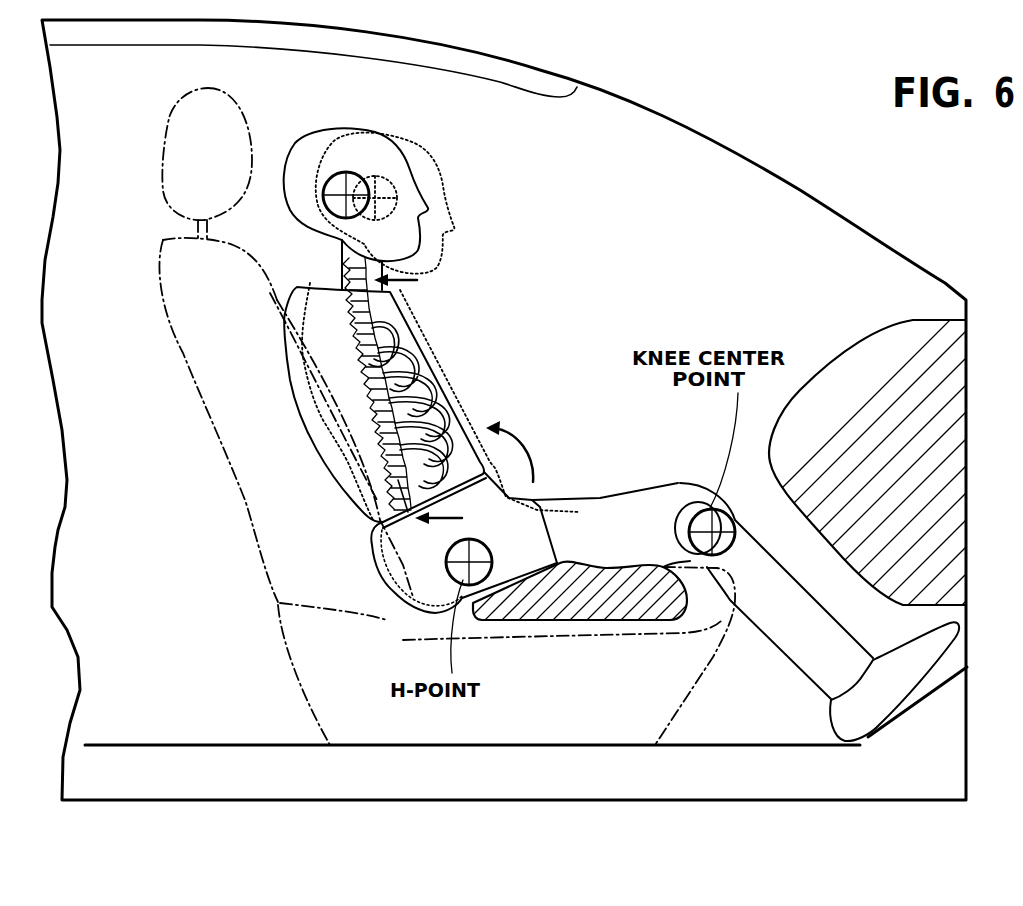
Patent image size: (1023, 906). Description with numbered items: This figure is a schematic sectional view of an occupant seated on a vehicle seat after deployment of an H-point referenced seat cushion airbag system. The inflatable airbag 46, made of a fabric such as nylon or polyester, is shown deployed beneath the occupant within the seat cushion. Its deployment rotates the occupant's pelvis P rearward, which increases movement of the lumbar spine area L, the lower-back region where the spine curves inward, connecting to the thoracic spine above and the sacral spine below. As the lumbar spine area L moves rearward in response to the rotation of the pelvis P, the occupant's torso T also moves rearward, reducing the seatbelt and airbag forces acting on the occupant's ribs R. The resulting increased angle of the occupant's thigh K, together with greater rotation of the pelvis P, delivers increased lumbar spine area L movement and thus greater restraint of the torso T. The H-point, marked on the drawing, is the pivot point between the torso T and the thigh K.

The ribs R is at (403, 340).
The torso T is at (430, 373).
The lumbar spine area L is at (390, 500).
The pelvis P is at (433, 587).
The thigh K is at (615, 517).
The inflatable airbag 46 is at (583, 602).